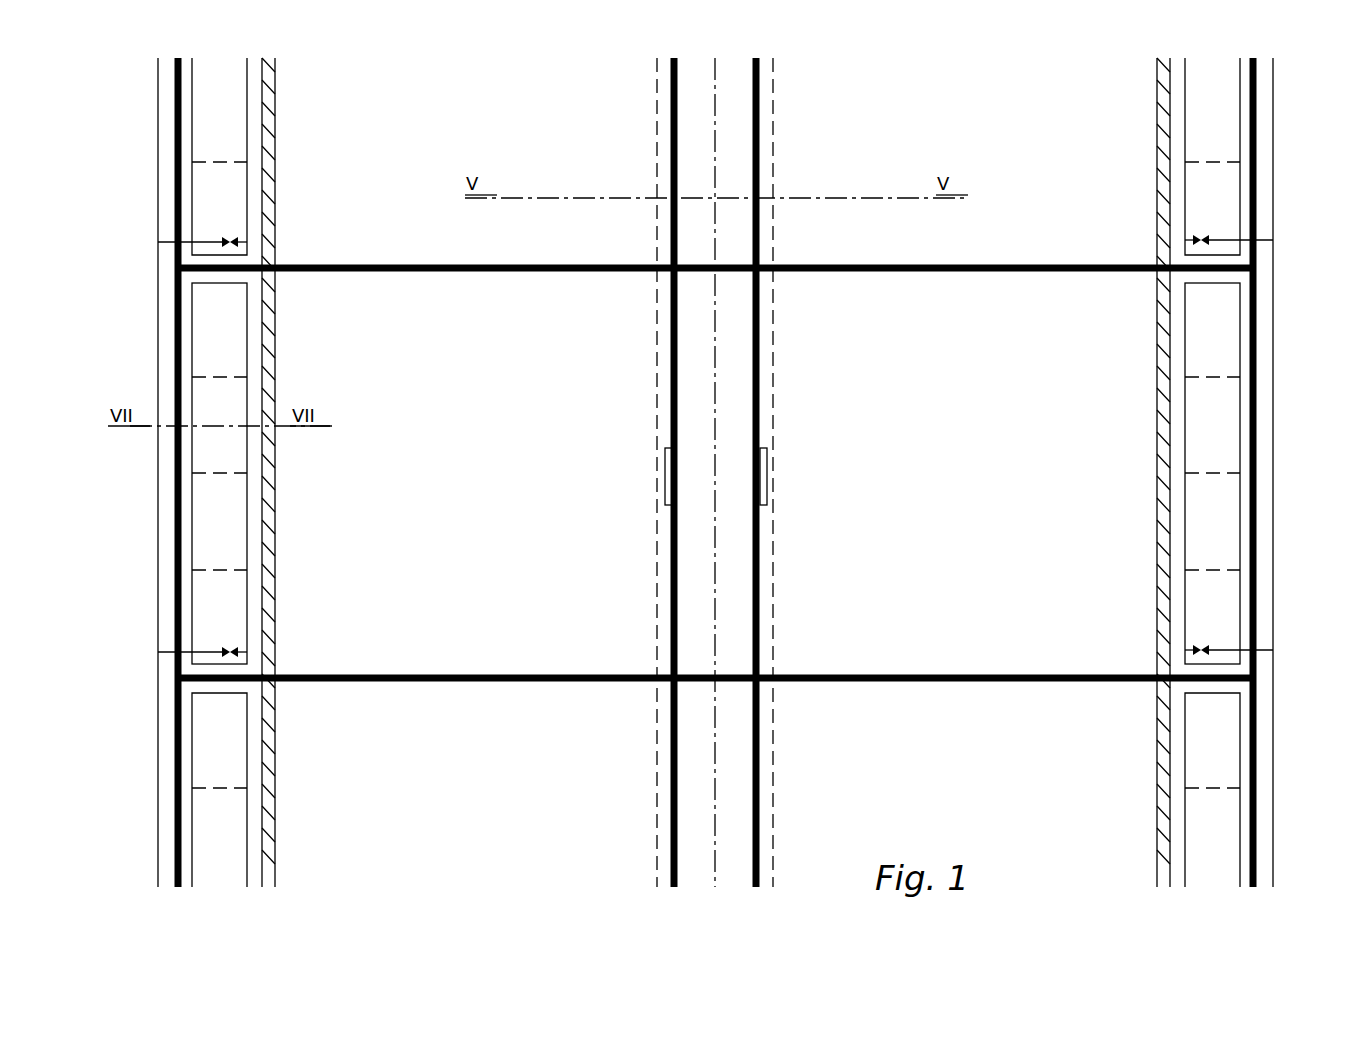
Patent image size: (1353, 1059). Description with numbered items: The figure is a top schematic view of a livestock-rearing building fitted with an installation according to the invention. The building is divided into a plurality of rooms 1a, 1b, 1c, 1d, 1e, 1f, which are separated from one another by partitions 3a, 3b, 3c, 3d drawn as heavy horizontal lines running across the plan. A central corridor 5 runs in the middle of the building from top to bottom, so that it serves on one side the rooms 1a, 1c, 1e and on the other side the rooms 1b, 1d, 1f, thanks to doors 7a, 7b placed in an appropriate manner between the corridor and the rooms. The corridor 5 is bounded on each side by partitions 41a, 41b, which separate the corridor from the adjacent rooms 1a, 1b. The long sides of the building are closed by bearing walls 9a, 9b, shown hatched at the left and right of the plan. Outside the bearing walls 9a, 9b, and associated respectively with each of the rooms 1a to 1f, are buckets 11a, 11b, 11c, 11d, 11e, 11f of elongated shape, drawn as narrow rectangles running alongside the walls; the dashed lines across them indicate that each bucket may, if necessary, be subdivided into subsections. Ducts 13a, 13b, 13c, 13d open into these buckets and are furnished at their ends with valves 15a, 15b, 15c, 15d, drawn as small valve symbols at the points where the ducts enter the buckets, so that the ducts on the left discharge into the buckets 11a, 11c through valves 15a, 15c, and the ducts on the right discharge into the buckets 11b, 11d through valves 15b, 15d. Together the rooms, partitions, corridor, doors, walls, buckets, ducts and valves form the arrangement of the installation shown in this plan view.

The room 1a is at (444, 155).
The room 1b is at (981, 155).
The room 1c is at (443, 483).
The room 1d is at (981, 483).
The room 1e is at (444, 788).
The room 1f is at (978, 788).
The partition 3a is at (500, 272).
The partition 3b is at (930, 272).
The partition 3c is at (500, 682).
The partition 3d is at (930, 682).
The central corridor 5 is at (730, 118).
The door 7a is at (665, 460).
The door 7b is at (767, 460).
The bearing wall 9a is at (276, 126).
The bearing wall 9b is at (1157, 126).
The bucket 11a is at (247, 76).
The bucket 11b is at (1185, 76).
The bucket 11c is at (247, 328).
The bucket 11d is at (1185, 328).
The bucket 11e is at (247, 742).
The bucket 11f is at (1185, 742).
The duct 13a is at (203, 242).
The duct 13b is at (1228, 240).
The duct 13c is at (203, 652).
The duct 13d is at (1228, 650).
The valve 15a is at (238, 242).
The valve 15b is at (1193, 240).
The valve 15c is at (238, 652).
The valve 15d is at (1193, 650).
The partition 41a is at (672, 778).
The partition 41b is at (760, 778).